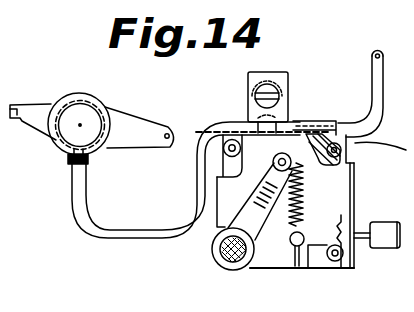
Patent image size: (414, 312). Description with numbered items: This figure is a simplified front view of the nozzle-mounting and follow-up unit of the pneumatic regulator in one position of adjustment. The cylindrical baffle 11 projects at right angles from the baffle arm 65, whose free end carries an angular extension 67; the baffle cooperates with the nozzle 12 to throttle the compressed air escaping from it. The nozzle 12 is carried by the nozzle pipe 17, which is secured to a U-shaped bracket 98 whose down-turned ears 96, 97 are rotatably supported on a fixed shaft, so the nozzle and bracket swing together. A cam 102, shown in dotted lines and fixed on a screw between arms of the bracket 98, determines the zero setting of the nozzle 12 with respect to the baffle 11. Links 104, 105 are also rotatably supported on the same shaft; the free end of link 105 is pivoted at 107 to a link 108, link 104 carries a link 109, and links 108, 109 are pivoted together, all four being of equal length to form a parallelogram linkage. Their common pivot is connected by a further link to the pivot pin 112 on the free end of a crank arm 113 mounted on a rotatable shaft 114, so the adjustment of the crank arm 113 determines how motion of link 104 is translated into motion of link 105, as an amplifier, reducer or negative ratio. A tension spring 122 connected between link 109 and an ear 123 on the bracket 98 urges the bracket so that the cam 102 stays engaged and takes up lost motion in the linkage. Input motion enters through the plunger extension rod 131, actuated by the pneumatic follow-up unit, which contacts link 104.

The baffle 11 is at (97, 107).
The baffle arm 65 is at (135, 123).
The angular extension 67 is at (13, 119).
The nozzle 12 is at (88, 160).
The link 108 is at (213, 223).
The pivot 107 is at (222, 143).
The link 105 is at (249, 140).
The cam 102 is at (338, 72).
The U-shaped bracket 98 is at (318, 120).
The nozzle pipe 17 is at (398, 139).
The down-turned ear 96 is at (403, 75).
The pivot pin 112 is at (262, 155).
The crank arm 113 is at (243, 215).
The rotatable shaft 114 is at (231, 270).
The tension spring 122 is at (342, 214).
The ear 123 is at (342, 194).
The down-turned ear 97 is at (346, 150).
The link 104 is at (402, 198).
The link 109 is at (291, 270).
The plunger extension rod 131 is at (362, 238).